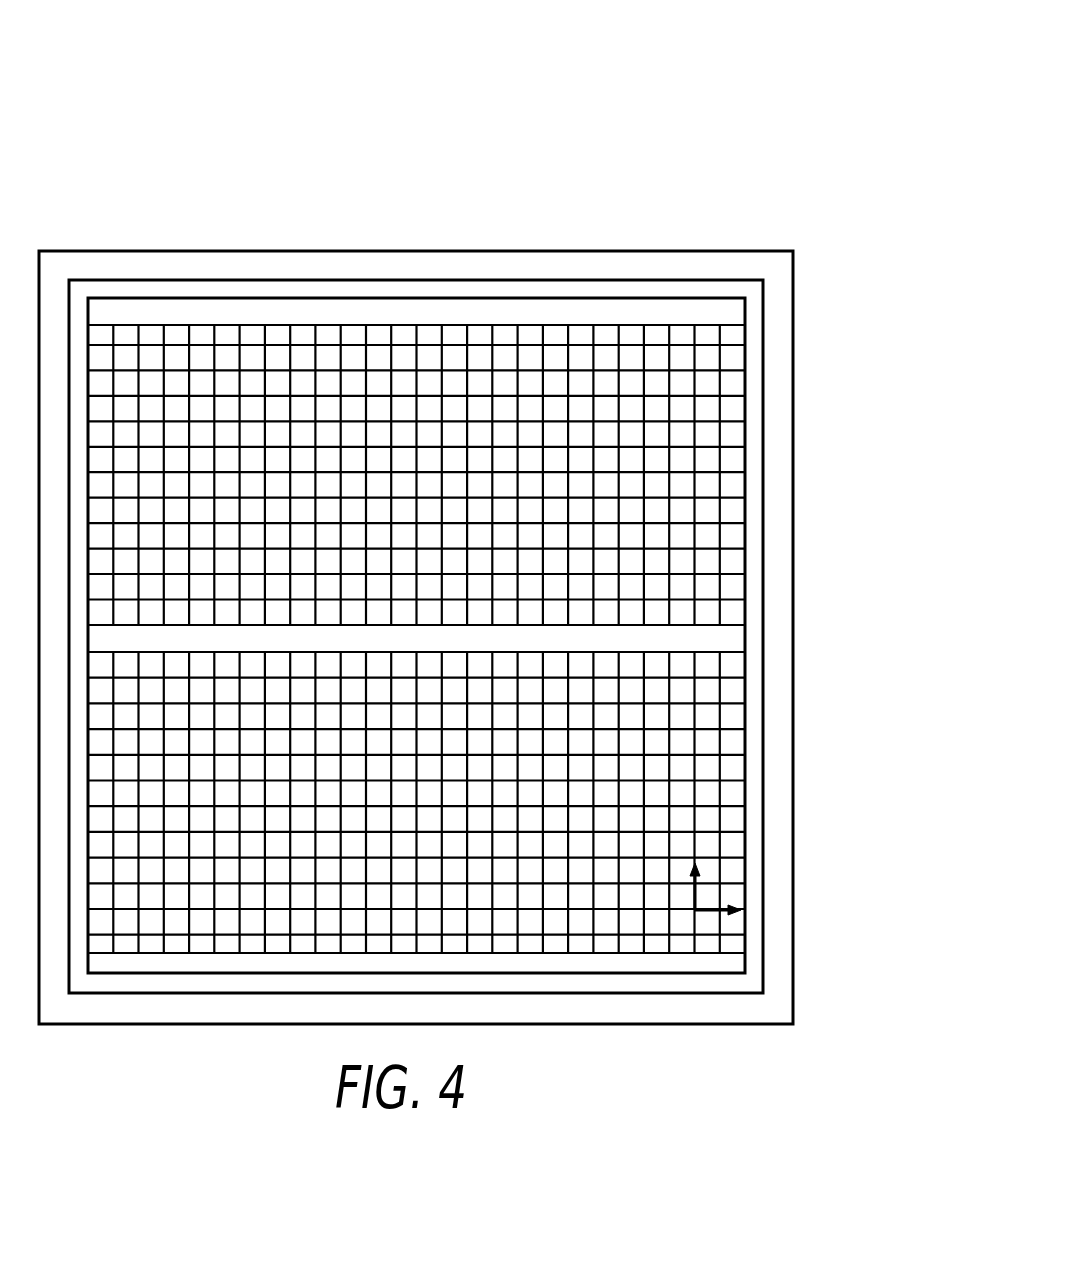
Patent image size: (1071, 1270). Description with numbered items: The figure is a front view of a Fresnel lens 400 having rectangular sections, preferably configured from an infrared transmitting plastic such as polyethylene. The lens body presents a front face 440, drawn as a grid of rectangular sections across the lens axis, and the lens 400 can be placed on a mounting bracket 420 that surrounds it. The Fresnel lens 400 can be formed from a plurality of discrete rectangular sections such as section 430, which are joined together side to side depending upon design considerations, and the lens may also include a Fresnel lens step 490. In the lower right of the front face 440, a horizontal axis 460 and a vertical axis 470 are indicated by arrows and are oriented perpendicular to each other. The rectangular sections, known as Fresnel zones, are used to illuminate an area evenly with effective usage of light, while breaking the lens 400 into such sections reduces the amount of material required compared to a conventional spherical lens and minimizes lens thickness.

The Fresnel lens 400 is at (474, 559).
The mounting bracket 420 is at (793, 543).
The section 430 is at (765, 453).
The Fresnel lens step 490 is at (777, 333).
The front face 440 is at (685, 413).
The vertical axis 470 is at (699, 893).
The horizontal axis 460 is at (713, 906).